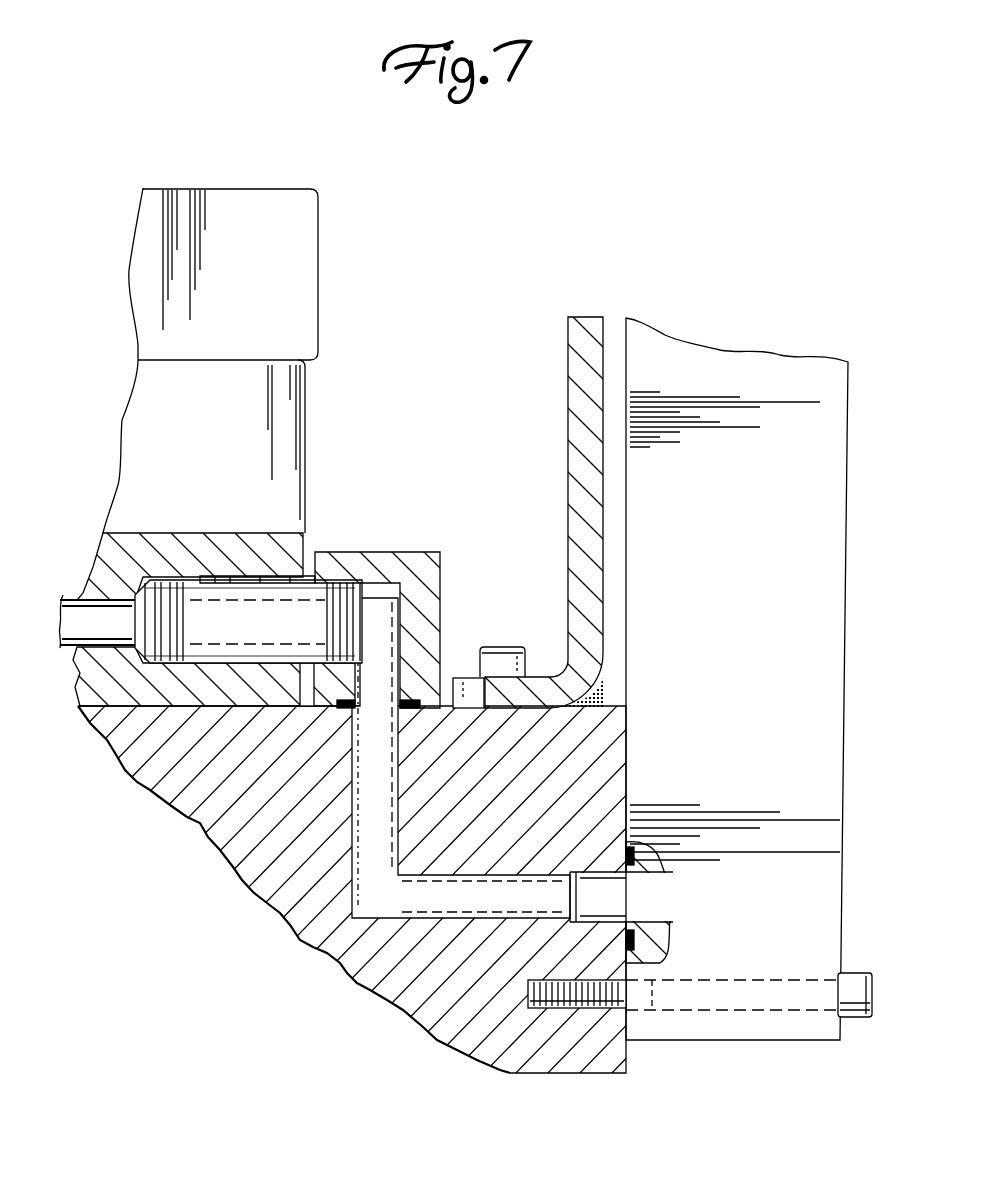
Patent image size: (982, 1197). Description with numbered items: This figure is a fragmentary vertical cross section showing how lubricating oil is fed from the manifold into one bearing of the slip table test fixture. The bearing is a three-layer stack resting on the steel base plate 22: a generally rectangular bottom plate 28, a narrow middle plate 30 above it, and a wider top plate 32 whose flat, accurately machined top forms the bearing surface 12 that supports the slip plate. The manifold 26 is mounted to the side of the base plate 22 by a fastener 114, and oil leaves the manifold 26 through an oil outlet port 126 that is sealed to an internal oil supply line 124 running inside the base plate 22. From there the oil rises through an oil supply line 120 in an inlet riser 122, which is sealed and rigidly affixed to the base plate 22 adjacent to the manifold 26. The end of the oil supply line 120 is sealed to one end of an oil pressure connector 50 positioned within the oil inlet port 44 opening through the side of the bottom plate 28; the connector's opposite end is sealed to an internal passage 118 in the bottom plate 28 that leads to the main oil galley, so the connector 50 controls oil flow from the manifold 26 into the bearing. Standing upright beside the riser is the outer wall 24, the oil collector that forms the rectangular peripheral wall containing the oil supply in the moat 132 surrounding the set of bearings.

The bearing surface 12 is at (184, 190).
The top plate 32 is at (228, 200).
The middle plate 30 is at (157, 400).
The bottom plate 28 is at (113, 550).
The internal passage 118 is at (85, 622).
The oil pressure connector 50 is at (207, 612).
The oil inlet port 44 is at (270, 567).
The inlet riser 122 is at (420, 570).
The oil supply line 120 is at (385, 647).
The outer wall 24 is at (583, 437).
The manifold 26 is at (822, 630).
The base plate 22 is at (597, 748).
The internal oil supply line 124 is at (468, 892).
The oil outlet port 126 is at (652, 895).
The fastener 114 is at (853, 973).
The moat 132 is at (498, 322).